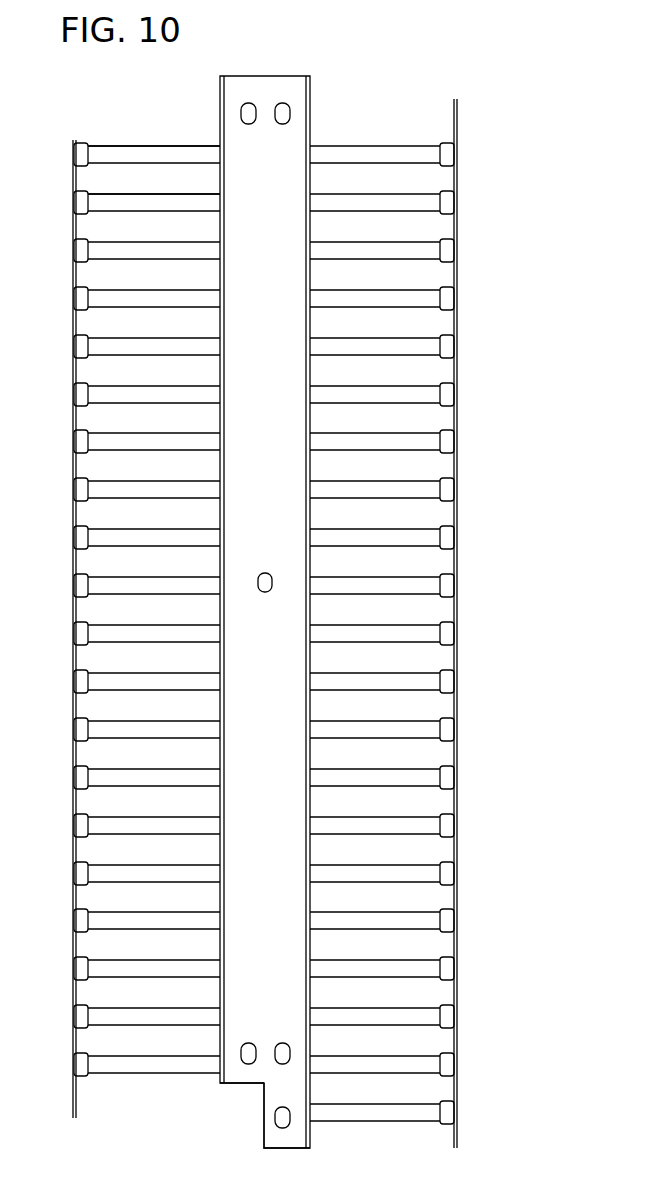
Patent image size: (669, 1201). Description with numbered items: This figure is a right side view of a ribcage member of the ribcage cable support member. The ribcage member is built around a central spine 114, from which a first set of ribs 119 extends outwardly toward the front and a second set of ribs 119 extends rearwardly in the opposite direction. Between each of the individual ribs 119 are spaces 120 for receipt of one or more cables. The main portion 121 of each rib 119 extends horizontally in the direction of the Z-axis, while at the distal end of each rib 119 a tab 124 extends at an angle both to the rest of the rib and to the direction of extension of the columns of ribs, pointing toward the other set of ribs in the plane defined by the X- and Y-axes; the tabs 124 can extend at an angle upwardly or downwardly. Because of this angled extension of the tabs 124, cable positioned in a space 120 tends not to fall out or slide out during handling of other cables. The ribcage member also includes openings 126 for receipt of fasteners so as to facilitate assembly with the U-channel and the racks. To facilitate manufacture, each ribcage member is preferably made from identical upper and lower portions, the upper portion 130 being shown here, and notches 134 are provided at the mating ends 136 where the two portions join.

The central spine 114 is at (265, 76).
The rib 119 is at (110, 146).
The space 120 is at (136, 192).
The main portion 121 is at (131, 146).
The tab 124 is at (73, 178).
The opening 126 is at (282, 125).
The upper portion 130 is at (373, 110).
The notch 134 is at (237, 1085).
The mating end 136 is at (282, 1149).